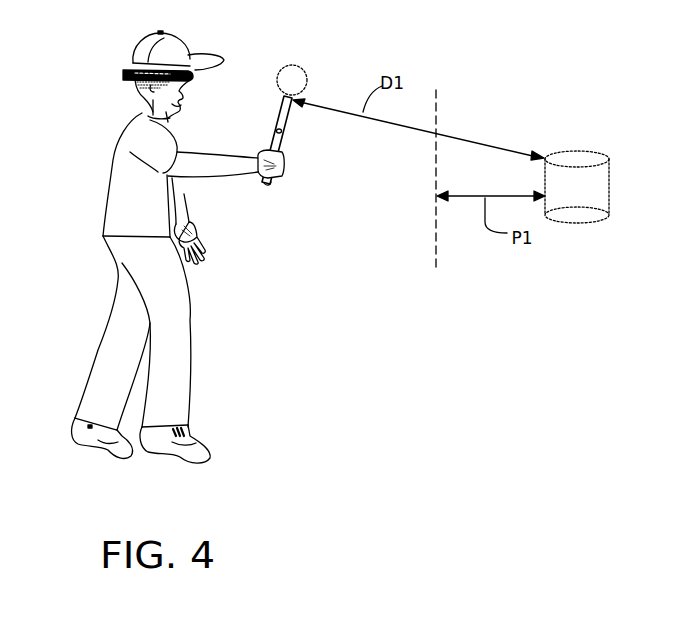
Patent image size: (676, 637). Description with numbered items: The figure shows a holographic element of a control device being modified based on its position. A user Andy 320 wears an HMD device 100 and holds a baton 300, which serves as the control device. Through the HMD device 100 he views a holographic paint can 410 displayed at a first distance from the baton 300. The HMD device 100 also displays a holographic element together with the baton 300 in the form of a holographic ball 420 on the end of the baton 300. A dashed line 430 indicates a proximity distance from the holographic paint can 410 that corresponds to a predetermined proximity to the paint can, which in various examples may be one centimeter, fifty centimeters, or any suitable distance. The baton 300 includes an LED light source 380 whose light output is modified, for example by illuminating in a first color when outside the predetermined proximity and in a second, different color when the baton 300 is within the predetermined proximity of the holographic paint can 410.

The HMD device 100 is at (193, 74).
The baton 300 is at (273, 146).
The user Andy 320 is at (105, 203).
The LED light source 380 is at (282, 130).
The holographic paint can 410 is at (609, 188).
The holographic ball 420 is at (283, 67).
The dashed line 430 is at (438, 112).